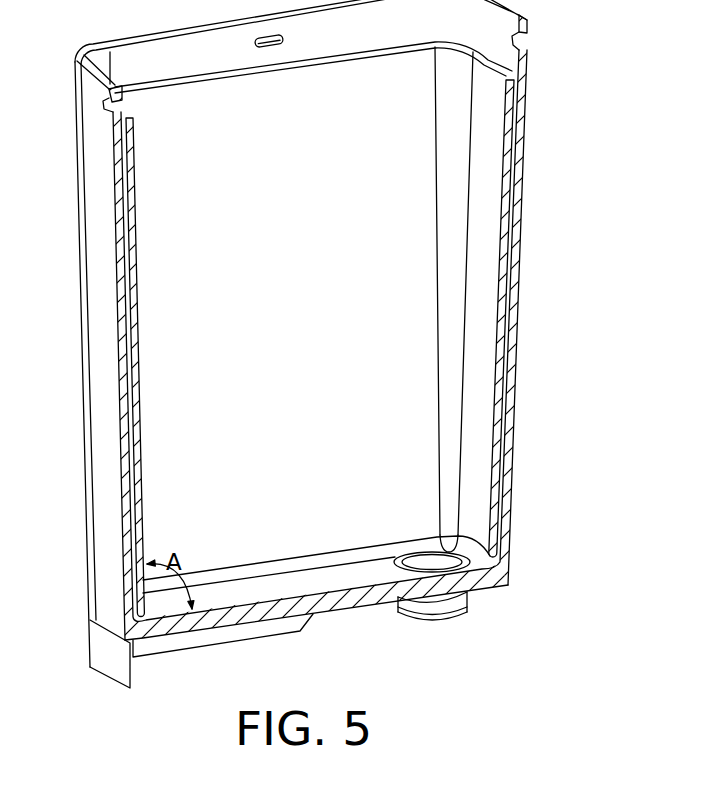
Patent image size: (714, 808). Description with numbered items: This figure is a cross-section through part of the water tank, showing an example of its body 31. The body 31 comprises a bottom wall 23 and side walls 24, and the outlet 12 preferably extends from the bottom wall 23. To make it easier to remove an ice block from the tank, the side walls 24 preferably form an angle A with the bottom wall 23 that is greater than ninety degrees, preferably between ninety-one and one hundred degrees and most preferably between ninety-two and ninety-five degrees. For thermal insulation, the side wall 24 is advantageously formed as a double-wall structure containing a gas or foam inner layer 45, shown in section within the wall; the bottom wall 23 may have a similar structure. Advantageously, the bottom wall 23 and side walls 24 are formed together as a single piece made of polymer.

The body 31 is at (103, 352).
The side wall 24 is at (515, 365).
The gas or foam inner layer 45 is at (507, 258).
The bottom wall 23 is at (352, 598).
The outlet 12 is at (457, 607).